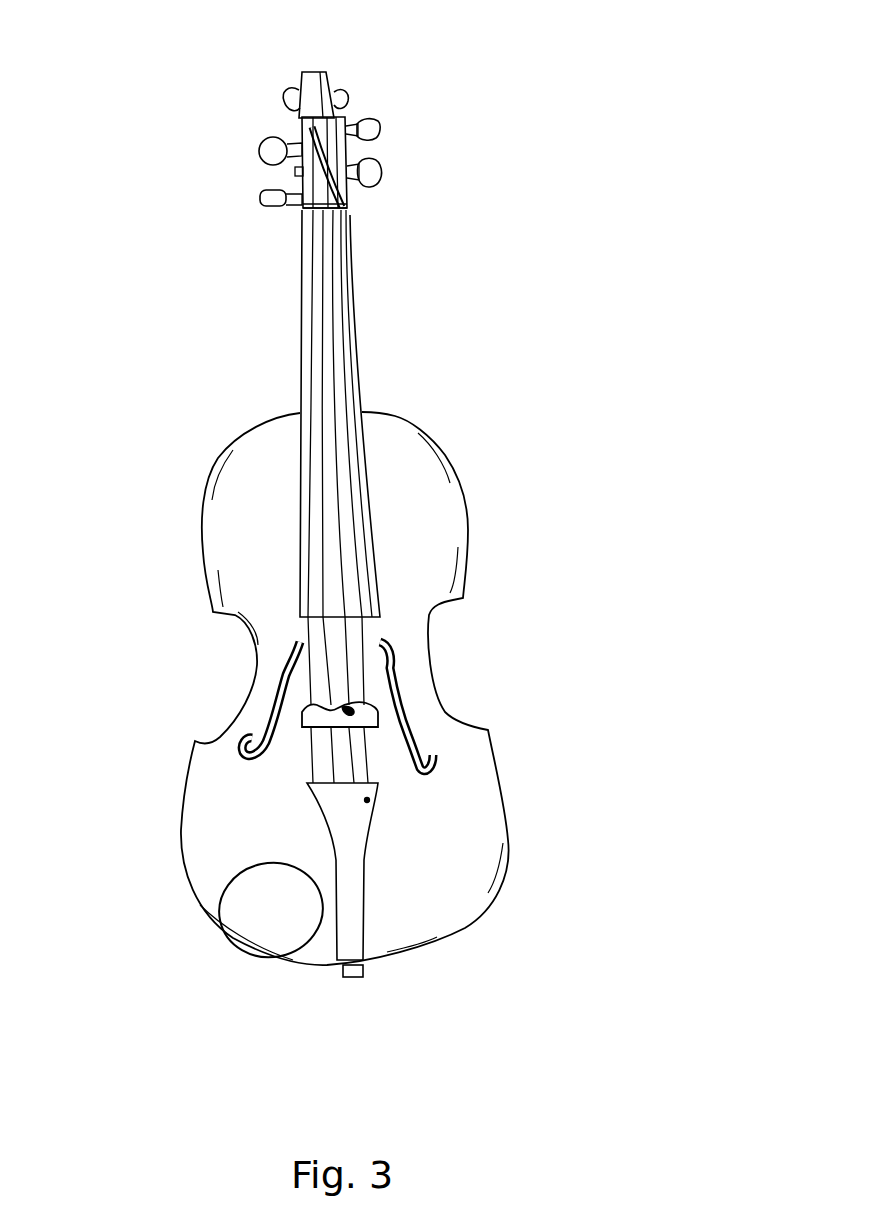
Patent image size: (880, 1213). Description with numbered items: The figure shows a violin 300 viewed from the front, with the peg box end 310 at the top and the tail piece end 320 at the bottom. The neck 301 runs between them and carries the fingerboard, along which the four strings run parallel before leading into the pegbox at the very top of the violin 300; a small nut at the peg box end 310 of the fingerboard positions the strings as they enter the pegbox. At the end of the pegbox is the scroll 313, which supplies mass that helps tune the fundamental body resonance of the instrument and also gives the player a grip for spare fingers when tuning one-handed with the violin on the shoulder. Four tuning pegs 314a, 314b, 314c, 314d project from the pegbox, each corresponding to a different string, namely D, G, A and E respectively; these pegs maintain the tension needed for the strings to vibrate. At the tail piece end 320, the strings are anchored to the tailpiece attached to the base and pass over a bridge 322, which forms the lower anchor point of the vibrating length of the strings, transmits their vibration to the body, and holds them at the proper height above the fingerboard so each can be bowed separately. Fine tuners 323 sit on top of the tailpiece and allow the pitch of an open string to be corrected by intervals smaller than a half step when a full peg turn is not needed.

The violin 300 is at (470, 455).
The neck 301 is at (358, 302).
The peg box end 310 is at (412, 83).
The scroll 313 is at (330, 82).
The tuning peg 314a is at (258, 151).
The tuning peg 314b is at (258, 198).
The tuning peg 314c is at (380, 125).
The tuning peg 314d is at (382, 172).
The tail piece end 320 is at (152, 902).
The bridge 322 is at (357, 718).
The fine tuners 323 is at (380, 803).